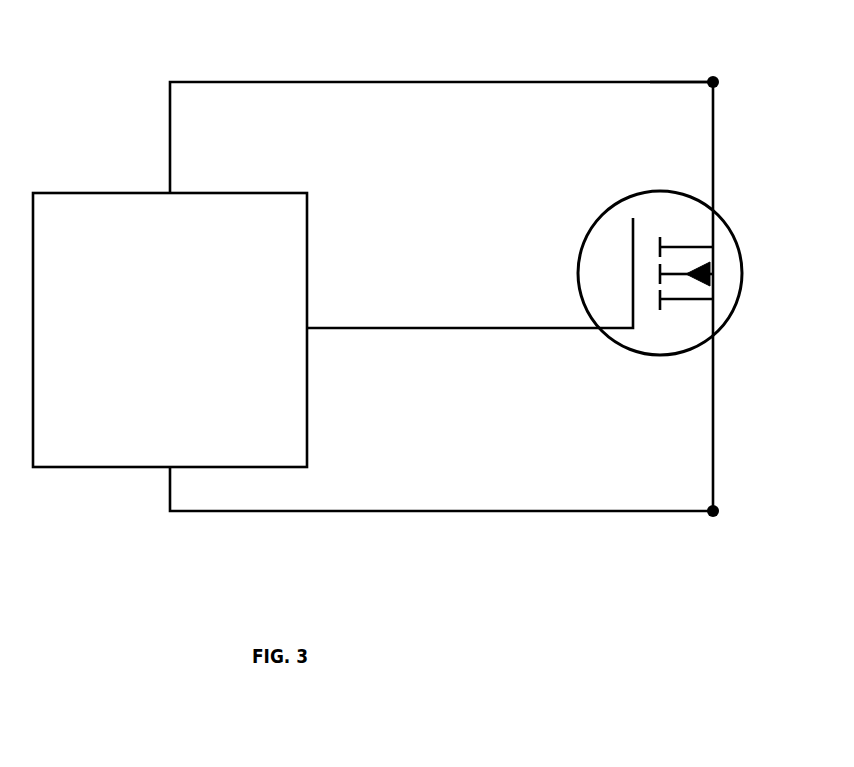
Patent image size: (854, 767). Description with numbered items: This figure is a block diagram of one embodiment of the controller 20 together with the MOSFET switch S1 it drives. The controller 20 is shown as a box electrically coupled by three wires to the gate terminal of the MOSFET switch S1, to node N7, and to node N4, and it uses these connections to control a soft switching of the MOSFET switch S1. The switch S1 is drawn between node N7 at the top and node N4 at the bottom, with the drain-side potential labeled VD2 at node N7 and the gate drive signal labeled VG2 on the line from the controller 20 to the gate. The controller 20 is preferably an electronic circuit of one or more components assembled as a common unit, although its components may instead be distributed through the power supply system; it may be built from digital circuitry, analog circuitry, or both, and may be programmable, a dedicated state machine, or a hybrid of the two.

The controller 20 is at (181, 354).
The MOSFET switch S1 is at (660, 260).
The node N7 is at (729, 65).
The node N4 is at (719, 516).
The drain voltage V_D2 VD2 is at (700, 65).
The gate voltage V_G2 VG2 is at (590, 340).